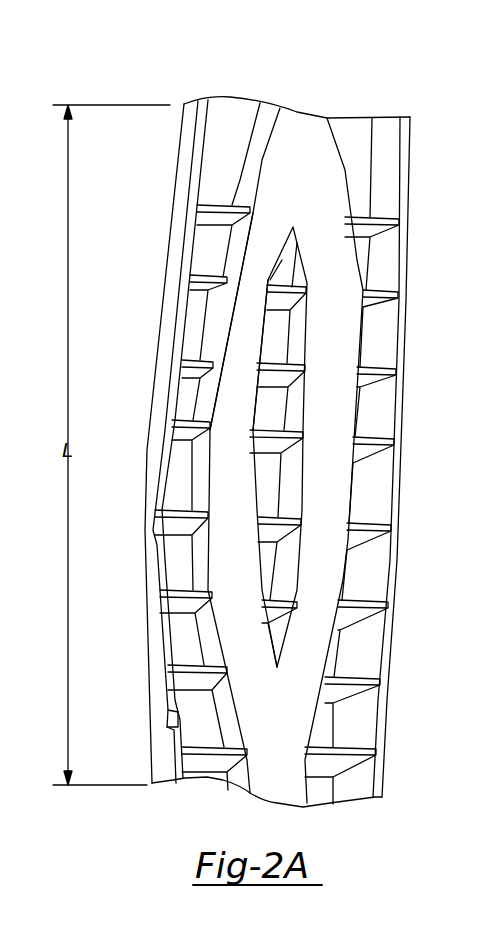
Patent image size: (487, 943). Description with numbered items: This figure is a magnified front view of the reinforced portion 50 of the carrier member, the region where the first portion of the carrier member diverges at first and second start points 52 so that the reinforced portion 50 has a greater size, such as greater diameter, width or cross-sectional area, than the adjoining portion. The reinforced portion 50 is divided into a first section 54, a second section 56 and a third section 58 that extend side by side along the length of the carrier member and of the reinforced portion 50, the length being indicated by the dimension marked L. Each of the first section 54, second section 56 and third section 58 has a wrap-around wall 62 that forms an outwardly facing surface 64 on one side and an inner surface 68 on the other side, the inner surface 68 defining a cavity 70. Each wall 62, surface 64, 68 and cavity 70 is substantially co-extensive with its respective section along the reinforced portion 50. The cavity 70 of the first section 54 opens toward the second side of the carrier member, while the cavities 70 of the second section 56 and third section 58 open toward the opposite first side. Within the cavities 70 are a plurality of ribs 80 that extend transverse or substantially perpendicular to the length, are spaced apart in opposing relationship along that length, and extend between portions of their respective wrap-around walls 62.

The reinforced portion 50 is at (185, 407).
The start points 52 is at (224, 189).
The first section 54 is at (293, 307).
The second section 56 is at (233, 335).
The third section 58 is at (317, 397).
The wall 62 is at (287, 490).
The outwardly facing surface 64 is at (320, 582).
The inner surface 68 is at (267, 423).
The cavity 70 is at (286, 335).
The ribs 80 is at (289, 363).